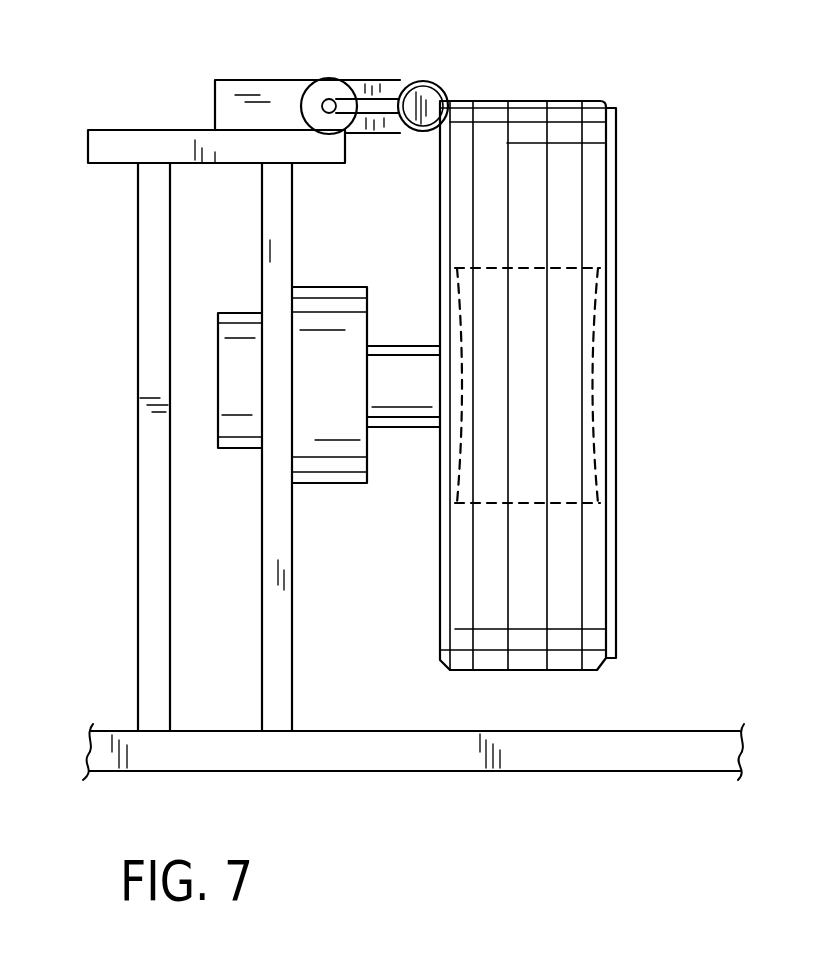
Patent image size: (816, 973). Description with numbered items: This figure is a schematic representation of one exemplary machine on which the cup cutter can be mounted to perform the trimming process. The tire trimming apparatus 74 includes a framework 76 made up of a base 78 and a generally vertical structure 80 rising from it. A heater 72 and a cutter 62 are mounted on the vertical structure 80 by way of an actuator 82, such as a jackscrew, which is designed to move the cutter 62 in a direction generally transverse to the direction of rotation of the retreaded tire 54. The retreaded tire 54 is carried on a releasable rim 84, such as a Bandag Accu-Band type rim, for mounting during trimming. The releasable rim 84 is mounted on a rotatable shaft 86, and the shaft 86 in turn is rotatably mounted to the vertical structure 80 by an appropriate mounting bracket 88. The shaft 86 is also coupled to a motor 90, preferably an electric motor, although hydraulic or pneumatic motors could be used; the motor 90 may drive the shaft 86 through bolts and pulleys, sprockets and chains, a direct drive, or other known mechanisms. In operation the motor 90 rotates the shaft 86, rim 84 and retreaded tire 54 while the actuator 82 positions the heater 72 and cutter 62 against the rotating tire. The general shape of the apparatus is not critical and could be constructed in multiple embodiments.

The retreaded tire 54 is at (610, 142).
The cutter 62 is at (418, 82).
The heater 72 is at (400, 80).
The tire trimming apparatus 74 is at (575, 336).
The framework 76 is at (379, 774).
The base 78 is at (638, 738).
The vertical structure 80 is at (138, 533).
The actuator 82 is at (162, 143).
The releasable rim 84 is at (596, 378).
The rotatable shaft 86 is at (408, 413).
The mounting bracket 88 is at (328, 300).
The motor 90 is at (240, 437).